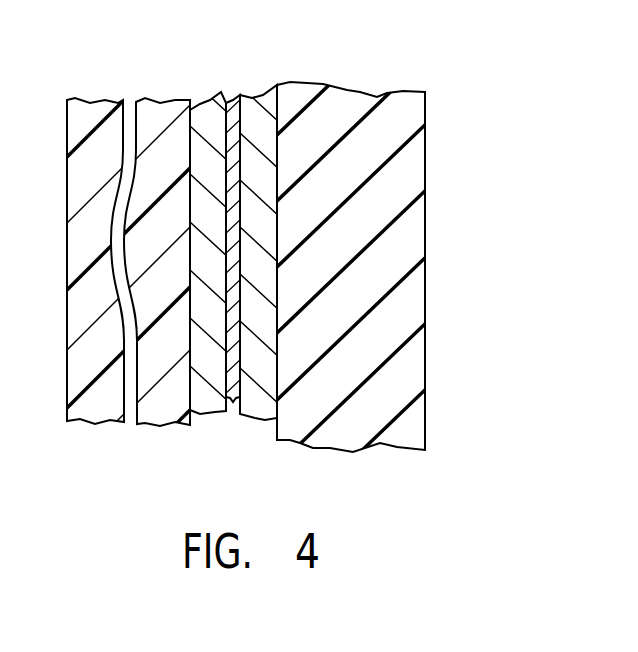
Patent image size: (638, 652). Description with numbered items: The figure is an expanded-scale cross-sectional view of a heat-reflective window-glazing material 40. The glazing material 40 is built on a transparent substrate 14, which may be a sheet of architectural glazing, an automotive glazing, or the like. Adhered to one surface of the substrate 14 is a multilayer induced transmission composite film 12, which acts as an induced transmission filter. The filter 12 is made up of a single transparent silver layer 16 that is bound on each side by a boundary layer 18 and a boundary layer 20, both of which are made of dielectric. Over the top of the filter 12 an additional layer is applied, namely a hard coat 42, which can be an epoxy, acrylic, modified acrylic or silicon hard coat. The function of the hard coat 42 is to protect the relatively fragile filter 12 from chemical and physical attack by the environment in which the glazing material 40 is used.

The multilayer induced transmission composite film 12 is at (242, 250).
The transparent substrate 14 is at (82, 420).
The transparent silver layer 16 is at (235, 401).
The boundary layer 18 is at (198, 412).
The boundary layer 20 is at (263, 420).
The glazing material 40 is at (290, 299).
The hard coat 42 is at (415, 364).